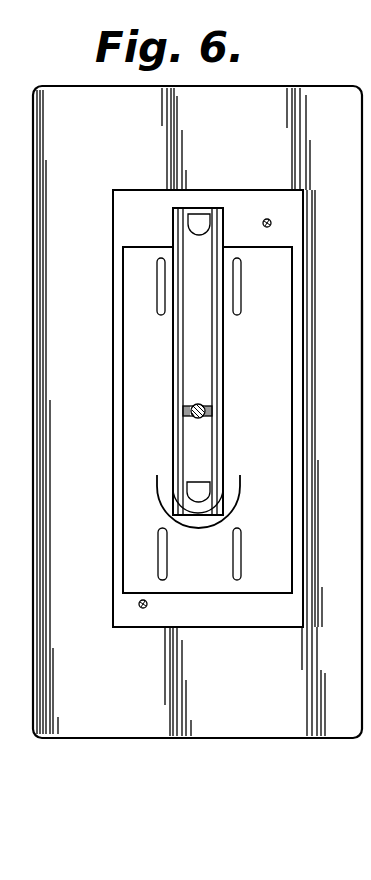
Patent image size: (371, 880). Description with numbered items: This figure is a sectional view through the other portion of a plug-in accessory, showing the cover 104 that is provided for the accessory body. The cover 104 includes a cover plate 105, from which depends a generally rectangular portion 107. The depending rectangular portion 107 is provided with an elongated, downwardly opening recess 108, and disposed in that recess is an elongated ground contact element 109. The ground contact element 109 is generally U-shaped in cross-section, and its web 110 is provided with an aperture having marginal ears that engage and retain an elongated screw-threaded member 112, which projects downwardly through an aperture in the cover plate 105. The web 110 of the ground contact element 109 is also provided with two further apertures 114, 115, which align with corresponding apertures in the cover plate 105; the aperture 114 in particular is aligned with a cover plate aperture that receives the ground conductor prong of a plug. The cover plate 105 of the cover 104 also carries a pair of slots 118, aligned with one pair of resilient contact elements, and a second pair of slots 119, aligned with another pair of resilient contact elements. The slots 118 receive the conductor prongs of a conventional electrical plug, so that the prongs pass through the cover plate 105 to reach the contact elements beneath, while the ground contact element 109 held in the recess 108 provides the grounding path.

The cover 104 is at (253, 742).
The cover plate 105 is at (362, 439).
The generally rectangular portion 107 is at (307, 227).
The downwardly opening recess 108 is at (228, 474).
The ground contact element 109 is at (227, 395).
The web 110 is at (197, 377).
The screw-threaded member 112 is at (199, 418).
The aperture 114 is at (198, 494).
The aperture 115 is at (197, 216).
The slots 118 is at (233, 556).
The slots 119 is at (157, 310).